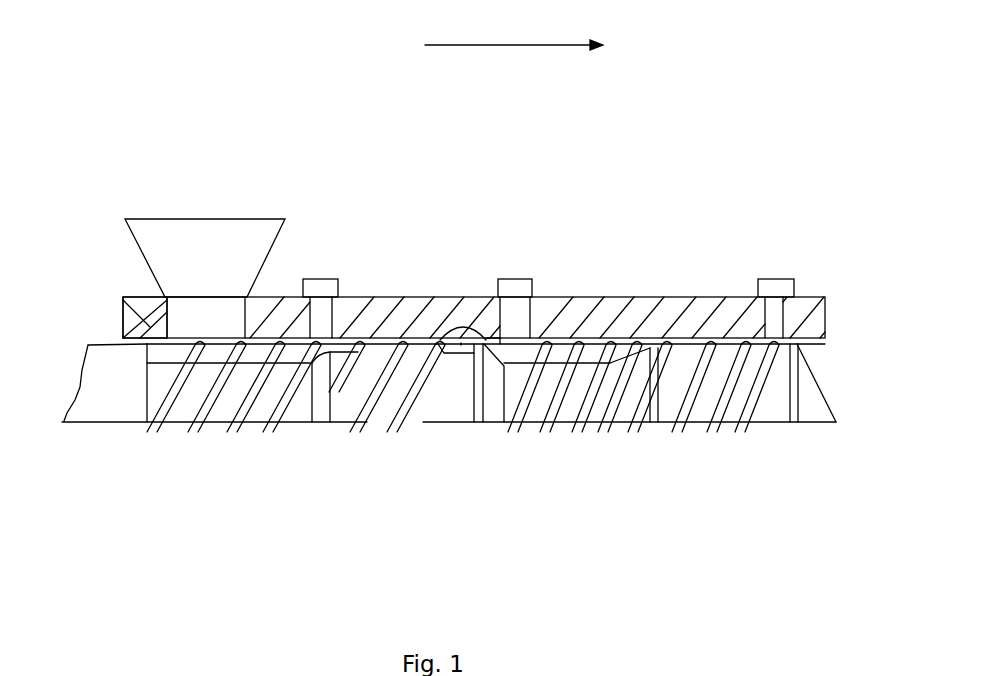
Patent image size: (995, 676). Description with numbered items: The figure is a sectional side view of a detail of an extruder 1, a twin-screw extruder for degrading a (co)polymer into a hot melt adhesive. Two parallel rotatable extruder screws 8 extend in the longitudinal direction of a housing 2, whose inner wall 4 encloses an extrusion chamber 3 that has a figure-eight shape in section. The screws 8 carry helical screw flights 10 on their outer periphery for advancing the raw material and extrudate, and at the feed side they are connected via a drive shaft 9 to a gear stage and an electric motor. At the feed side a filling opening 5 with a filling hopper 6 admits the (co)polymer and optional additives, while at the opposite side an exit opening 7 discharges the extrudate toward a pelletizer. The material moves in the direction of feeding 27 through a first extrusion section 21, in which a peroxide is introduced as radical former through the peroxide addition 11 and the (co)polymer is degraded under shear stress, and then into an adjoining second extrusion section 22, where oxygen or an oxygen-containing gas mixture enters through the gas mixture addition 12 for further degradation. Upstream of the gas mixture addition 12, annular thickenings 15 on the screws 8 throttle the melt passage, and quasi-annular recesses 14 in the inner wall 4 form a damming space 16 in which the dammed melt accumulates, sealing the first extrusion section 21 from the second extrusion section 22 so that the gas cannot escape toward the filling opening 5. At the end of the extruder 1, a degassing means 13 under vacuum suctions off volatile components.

The extruder 1 is at (240, 112).
The housing 2 is at (145, 325).
The extrusion chamber 3 is at (168, 358).
The inner wall 4 is at (382, 297).
The filling opening 5 is at (202, 327).
The filling hopper 6 is at (178, 250).
The exit opening 7 is at (850, 343).
The extruder screws 8 is at (670, 375).
The drive shaft 9 is at (108, 362).
The screw flights 10 is at (265, 340).
The peroxide addition 11 is at (318, 313).
The gas mixture addition 12 is at (523, 323).
The degassing means 13 is at (777, 313).
The recesses 14 is at (463, 329).
The annular thickenings 15 is at (486, 336).
The damming space 16 is at (461, 343).
The first extrusion section 21 is at (330, 484).
The second extrusion section 22 is at (622, 472).
The direction of feeding 27 is at (514, 34).